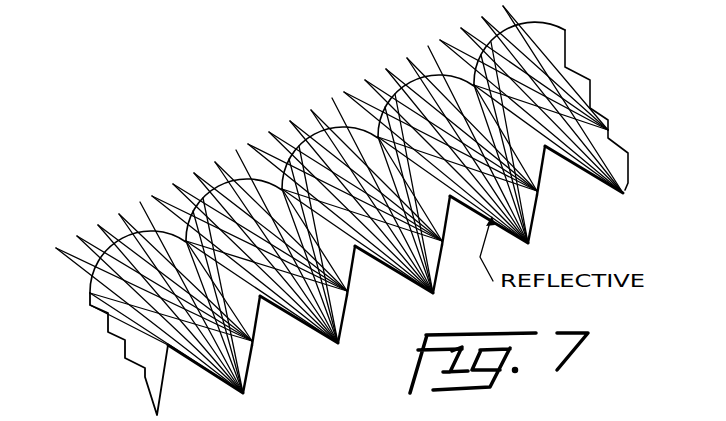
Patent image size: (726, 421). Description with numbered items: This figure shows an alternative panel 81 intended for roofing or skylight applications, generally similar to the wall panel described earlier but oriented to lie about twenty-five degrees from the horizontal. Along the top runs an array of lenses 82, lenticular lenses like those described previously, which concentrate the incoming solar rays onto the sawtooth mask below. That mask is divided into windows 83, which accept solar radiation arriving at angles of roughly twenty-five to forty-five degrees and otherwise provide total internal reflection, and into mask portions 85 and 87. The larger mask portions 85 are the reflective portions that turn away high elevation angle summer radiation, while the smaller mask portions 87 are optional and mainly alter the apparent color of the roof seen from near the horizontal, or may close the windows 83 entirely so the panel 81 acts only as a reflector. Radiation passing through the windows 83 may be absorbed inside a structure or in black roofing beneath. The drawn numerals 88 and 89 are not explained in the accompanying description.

The panel 81 is at (124, 348).
The array of lenses 82 is at (150, 231).
The windows 83 is at (249, 362).
The mask portions 85 is at (242, 391).
The mask portions 87 is at (258, 304).
The lens 88 is at (368, 112).
The lens 89 is at (438, 74).